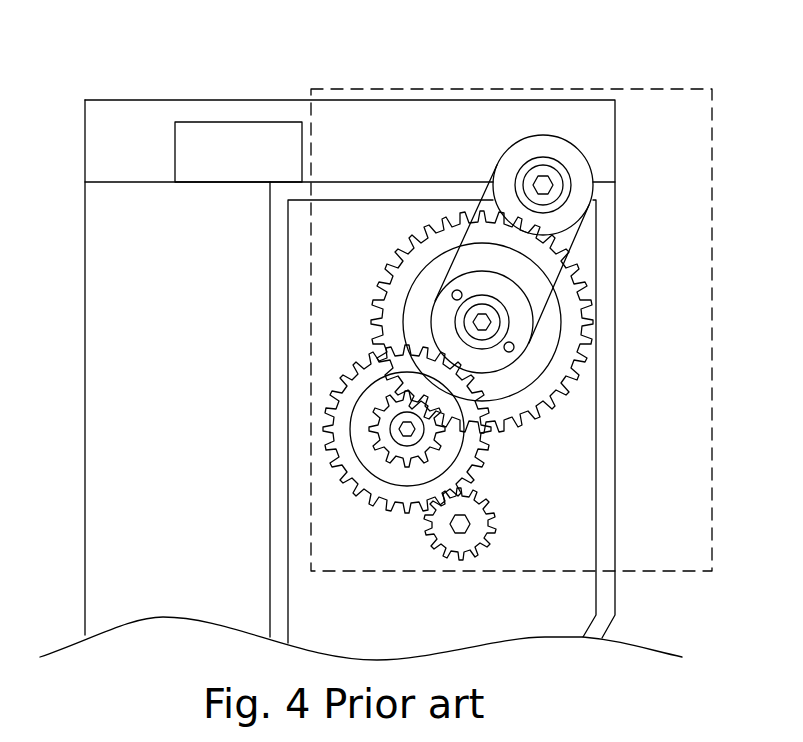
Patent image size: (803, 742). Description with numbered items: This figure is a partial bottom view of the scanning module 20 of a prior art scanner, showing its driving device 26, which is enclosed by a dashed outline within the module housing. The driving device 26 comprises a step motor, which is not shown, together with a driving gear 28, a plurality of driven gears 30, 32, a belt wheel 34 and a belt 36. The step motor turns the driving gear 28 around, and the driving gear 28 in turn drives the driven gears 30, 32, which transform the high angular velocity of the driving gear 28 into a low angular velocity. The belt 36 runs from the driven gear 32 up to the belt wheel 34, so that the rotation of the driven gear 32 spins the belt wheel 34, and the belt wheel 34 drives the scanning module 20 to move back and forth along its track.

The scanning module 20 is at (640, 45).
The driving device 26 is at (652, 89).
The driving gear 28 is at (473, 532).
The driven gear 30 is at (447, 450).
The driven gear 32 is at (532, 362).
The belt wheel 34 is at (578, 150).
The belt 36 is at (442, 292).